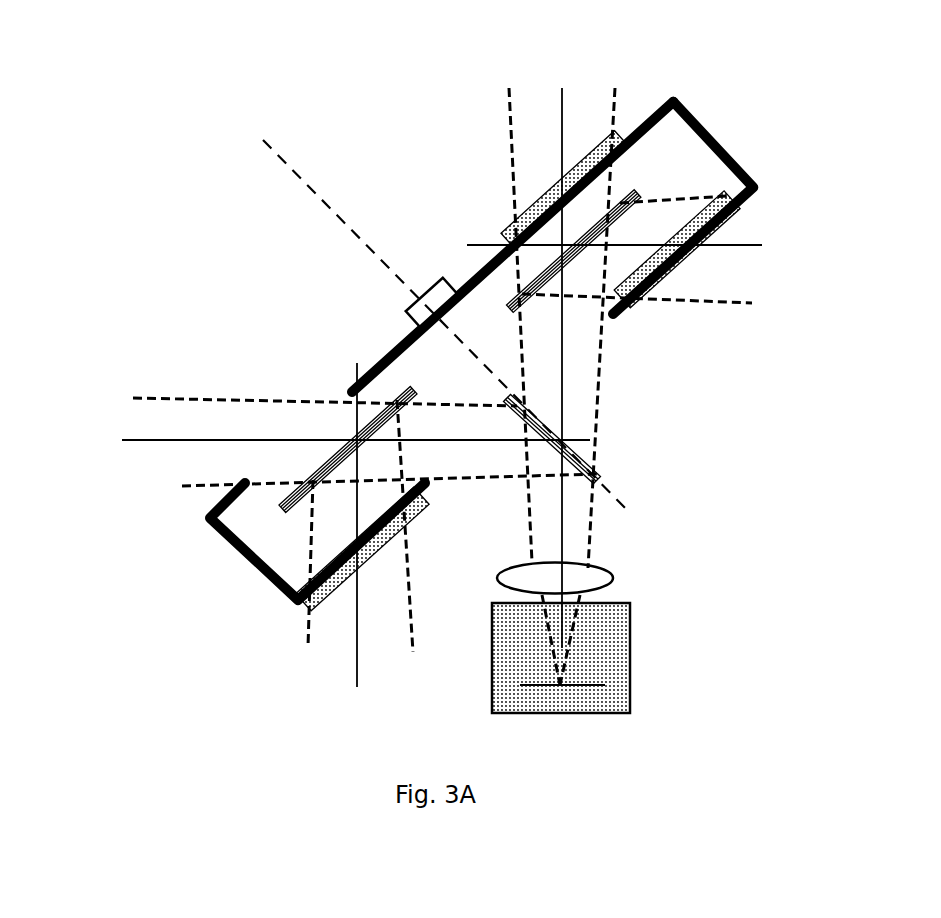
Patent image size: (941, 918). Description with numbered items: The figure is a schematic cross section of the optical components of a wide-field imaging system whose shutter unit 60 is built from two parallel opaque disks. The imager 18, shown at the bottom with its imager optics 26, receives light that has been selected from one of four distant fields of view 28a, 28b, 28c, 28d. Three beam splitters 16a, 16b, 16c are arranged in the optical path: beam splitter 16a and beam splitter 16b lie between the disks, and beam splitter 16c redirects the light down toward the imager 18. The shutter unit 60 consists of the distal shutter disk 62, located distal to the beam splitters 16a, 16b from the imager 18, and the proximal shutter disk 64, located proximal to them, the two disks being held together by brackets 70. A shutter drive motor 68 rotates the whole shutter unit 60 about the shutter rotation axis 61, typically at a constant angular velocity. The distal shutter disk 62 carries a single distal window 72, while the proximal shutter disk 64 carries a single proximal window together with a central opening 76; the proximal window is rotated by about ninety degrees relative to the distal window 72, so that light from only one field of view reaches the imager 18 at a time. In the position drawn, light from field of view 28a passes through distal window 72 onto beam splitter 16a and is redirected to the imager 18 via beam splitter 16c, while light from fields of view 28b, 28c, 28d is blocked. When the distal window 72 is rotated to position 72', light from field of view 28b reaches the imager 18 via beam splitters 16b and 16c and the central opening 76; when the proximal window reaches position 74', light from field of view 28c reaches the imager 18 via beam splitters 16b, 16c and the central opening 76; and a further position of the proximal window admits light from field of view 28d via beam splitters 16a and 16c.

The shutter unit 60 is at (337, 332).
The shutter rotation axis 61 is at (290, 166).
The distal shutter disk 62 is at (482, 265).
The proximal shutter disk 64 is at (747, 198).
The shutter drive motor 68 is at (422, 303).
The bracket 70 is at (728, 150).
The distal window 72 is at (346, 399).
The position of distal window 72' is at (516, 155).
The position of proximal window 74' is at (744, 249).
The central opening 76 is at (600, 353).
The beam splitter 16a is at (323, 468).
The beam splitter 16b is at (586, 230).
The beam splitter 16c is at (573, 452).
The imager 18 is at (632, 670).
The imager optics 26 is at (613, 572).
The field of view 28a is at (188, 468).
The field of view 28b is at (578, 97).
The field of view 28c is at (730, 278).
The field of view 28d is at (328, 618).